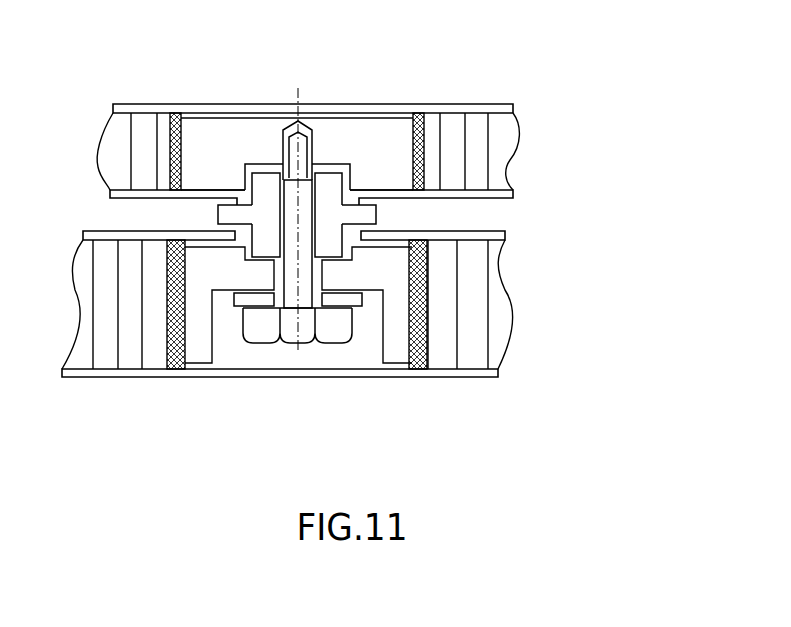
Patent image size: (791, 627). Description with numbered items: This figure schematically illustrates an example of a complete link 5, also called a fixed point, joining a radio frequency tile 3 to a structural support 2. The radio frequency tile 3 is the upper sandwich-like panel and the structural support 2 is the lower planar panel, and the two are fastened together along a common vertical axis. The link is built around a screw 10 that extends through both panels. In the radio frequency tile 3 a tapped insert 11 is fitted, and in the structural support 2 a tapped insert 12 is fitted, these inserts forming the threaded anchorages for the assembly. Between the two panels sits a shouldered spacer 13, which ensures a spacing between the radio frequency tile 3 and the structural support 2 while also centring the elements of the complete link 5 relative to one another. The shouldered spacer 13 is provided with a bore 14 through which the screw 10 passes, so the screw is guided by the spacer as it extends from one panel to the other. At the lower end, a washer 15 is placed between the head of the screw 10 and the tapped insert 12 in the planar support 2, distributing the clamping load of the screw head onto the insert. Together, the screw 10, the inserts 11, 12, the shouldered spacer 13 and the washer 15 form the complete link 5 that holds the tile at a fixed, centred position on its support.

The complete link 5 is at (592, 86).
The radio frequency tile 3 is at (500, 135).
The structural support 2 is at (480, 338).
The tapped insert 11 is at (365, 147).
The tapped insert 12 is at (202, 347).
The shouldered spacer 13 is at (232, 216).
The bore 14 is at (278, 157).
The screw 10 is at (308, 290).
The washer 15 is at (348, 298).